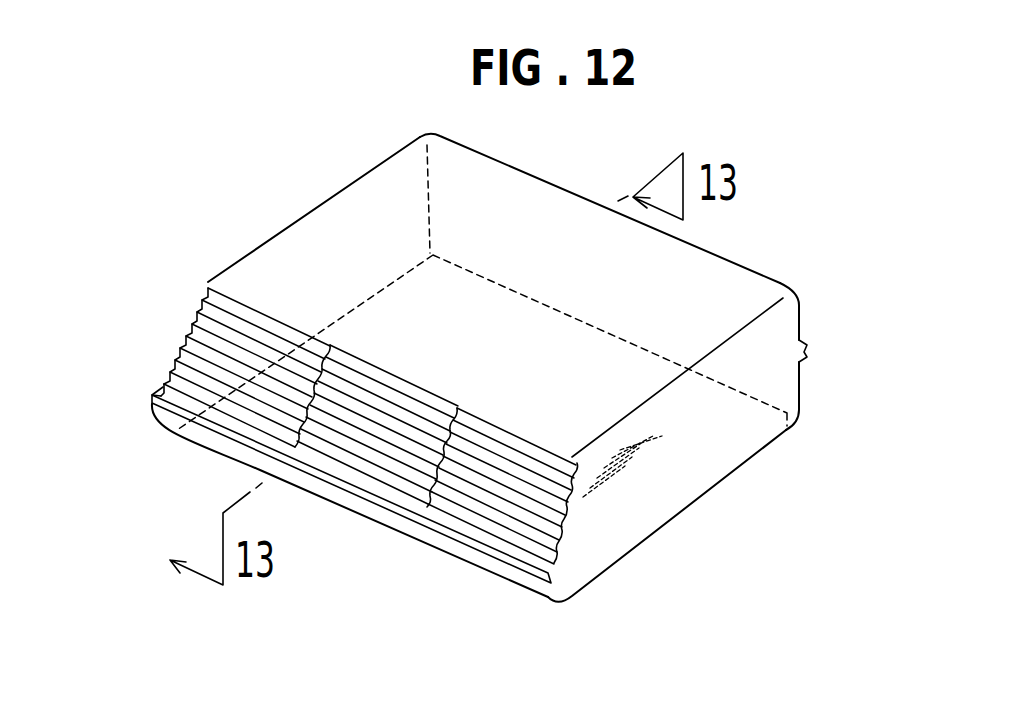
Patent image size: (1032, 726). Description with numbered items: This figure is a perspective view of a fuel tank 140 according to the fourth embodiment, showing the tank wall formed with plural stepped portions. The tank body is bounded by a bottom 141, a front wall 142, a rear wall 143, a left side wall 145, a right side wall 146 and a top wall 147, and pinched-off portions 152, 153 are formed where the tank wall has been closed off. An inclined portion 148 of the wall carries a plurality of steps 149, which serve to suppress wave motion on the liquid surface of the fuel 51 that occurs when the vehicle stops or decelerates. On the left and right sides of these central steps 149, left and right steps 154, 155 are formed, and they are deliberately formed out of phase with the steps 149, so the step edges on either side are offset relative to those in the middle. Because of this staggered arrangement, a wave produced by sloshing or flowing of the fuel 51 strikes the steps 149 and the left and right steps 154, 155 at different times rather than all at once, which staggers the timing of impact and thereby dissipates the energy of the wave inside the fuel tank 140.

The fuel tank 140 is at (182, 113).
The bottom 141 is at (708, 493).
The front wall 142 is at (144, 352).
The rear wall 143 is at (805, 382).
The left side wall 145 is at (645, 508).
The right side wall 146 is at (287, 220).
The top wall 147 is at (377, 190).
The inclined portion 148 is at (163, 335).
The steps 149 is at (387, 420).
The pinched-off portion 152 is at (390, 510).
The pinched-off portion 153 is at (810, 352).
The left steps 154 is at (508, 473).
The right steps 155 is at (255, 350).
The fuel 51 is at (577, 503).